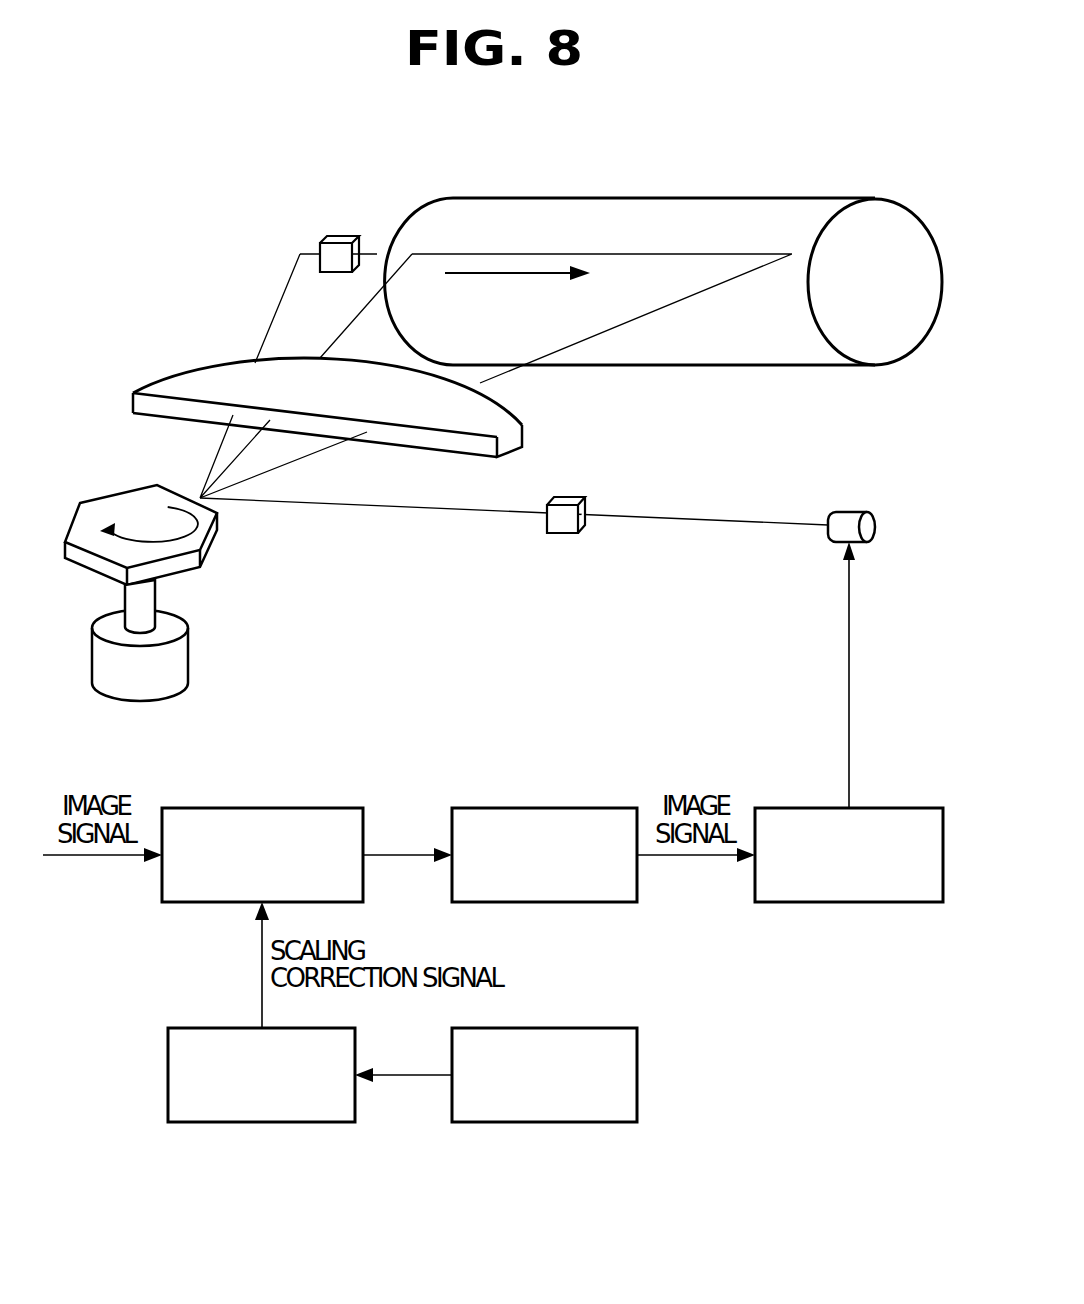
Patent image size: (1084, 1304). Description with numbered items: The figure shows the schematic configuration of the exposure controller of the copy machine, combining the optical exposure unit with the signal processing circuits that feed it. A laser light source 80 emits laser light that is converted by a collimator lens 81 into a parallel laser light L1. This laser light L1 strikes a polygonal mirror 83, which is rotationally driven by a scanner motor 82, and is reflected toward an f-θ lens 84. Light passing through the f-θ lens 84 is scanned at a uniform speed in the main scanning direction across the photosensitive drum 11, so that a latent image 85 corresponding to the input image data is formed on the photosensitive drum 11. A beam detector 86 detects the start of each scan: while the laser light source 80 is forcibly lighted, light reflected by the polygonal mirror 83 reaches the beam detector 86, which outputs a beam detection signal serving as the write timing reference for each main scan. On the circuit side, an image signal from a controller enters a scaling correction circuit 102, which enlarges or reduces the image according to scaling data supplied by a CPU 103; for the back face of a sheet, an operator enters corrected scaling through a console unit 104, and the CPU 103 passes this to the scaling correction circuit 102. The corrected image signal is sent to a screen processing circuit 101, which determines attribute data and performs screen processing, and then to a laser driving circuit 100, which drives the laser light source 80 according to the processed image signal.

The photosensitive drum 11 is at (693, 198).
The laser light source 80 is at (845, 512).
The collimator lens 81 is at (562, 535).
The scanner motor 82 is at (190, 658).
The polygonal mirror 83 is at (213, 545).
The f-θ lens 84 is at (522, 432).
The latent image 85 is at (497, 254).
The beam detector 86 is at (338, 237).
The laser driving circuit 100 is at (790, 808).
The screen processing circuit 101 is at (483, 808).
The scaling correction circuit 102 is at (202, 808).
The CPU 103 is at (203, 1028).
The console unit 104 is at (583, 1028).
The laser light L1 is at (399, 510).